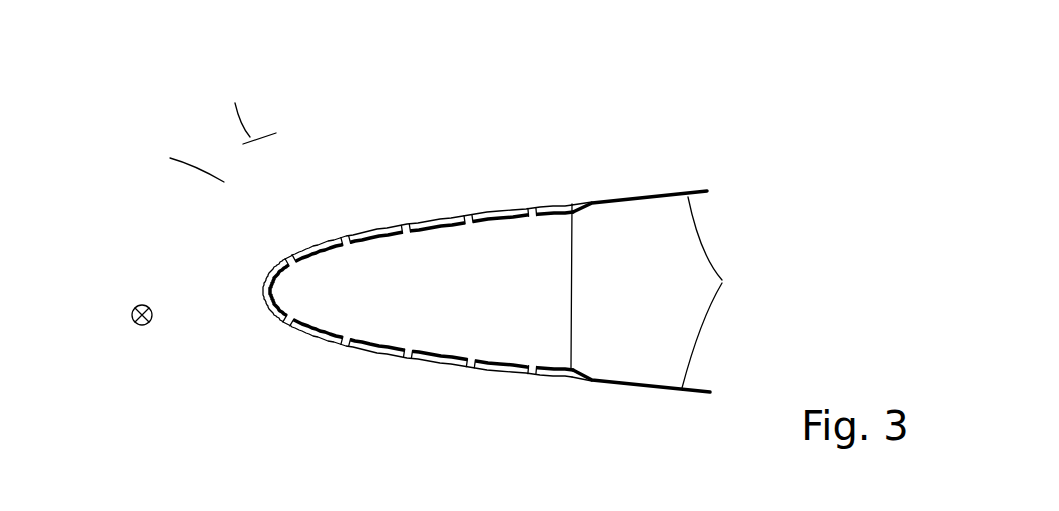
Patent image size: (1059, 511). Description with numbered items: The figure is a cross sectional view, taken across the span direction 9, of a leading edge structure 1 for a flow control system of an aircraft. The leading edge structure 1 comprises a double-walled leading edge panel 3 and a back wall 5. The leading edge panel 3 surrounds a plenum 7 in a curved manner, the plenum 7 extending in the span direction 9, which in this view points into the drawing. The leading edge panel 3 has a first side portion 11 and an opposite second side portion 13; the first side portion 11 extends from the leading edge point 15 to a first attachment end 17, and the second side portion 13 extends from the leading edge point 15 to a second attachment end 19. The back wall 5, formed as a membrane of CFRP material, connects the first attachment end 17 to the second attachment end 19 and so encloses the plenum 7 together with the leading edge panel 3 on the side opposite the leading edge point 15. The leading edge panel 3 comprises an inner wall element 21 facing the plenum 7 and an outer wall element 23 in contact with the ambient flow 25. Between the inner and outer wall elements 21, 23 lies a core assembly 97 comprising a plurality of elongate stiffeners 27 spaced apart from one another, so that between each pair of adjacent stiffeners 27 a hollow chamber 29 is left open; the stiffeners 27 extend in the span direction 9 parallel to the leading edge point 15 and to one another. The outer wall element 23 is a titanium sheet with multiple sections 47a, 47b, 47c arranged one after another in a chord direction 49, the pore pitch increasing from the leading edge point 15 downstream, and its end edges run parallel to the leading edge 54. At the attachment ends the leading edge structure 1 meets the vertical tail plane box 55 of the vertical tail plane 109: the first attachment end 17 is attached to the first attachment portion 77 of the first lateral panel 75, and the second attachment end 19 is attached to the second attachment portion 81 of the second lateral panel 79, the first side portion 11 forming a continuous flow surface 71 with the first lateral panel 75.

The leading edge structure 1 is at (189, 157).
The leading edge panel 3 is at (430, 227).
The back wall 5 is at (573, 310).
The plenum 7 is at (502, 298).
The span direction 9 is at (141, 302).
The first side portion 11 is at (452, 218).
The second side portion 13 is at (392, 358).
The leading edge point 15 is at (220, 321).
The first attachment end 17 is at (574, 203).
The second attachment end 19 is at (578, 382).
The inner wall element 21 is at (320, 266).
The outer wall element 23 is at (312, 252).
The ambient flow 25 is at (309, 371).
The stiffeners 27 is at (444, 402).
The hollow chamber 29 is at (437, 352).
The section 47a is at (273, 275).
The section 47b is at (368, 235).
The section 47c is at (503, 209).
The chord direction 49 is at (247, 108).
The leading edge 54 is at (266, 300).
The vertical tail plane box 55 is at (752, 292).
The flow surface 71 is at (602, 198).
The first lateral panel 75 is at (646, 159).
The first attachment portion 77 is at (645, 197).
The second lateral panel 79 is at (641, 427).
The second attachment portion 81 is at (630, 385).
The core assembly 97 is at (470, 372).
The vertical tail plane 109 is at (752, 292).